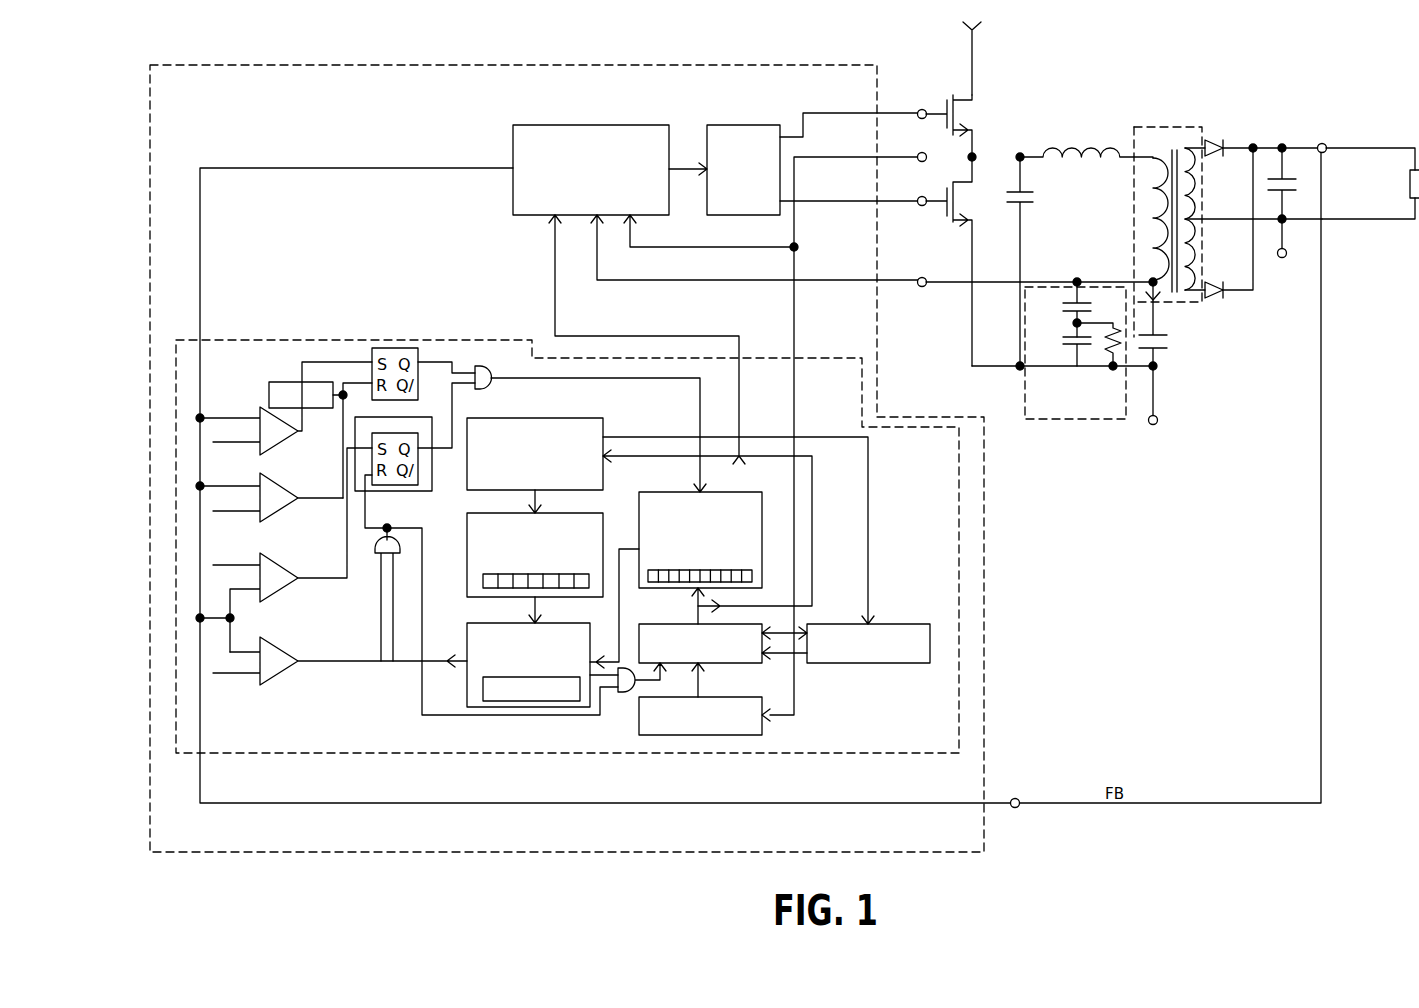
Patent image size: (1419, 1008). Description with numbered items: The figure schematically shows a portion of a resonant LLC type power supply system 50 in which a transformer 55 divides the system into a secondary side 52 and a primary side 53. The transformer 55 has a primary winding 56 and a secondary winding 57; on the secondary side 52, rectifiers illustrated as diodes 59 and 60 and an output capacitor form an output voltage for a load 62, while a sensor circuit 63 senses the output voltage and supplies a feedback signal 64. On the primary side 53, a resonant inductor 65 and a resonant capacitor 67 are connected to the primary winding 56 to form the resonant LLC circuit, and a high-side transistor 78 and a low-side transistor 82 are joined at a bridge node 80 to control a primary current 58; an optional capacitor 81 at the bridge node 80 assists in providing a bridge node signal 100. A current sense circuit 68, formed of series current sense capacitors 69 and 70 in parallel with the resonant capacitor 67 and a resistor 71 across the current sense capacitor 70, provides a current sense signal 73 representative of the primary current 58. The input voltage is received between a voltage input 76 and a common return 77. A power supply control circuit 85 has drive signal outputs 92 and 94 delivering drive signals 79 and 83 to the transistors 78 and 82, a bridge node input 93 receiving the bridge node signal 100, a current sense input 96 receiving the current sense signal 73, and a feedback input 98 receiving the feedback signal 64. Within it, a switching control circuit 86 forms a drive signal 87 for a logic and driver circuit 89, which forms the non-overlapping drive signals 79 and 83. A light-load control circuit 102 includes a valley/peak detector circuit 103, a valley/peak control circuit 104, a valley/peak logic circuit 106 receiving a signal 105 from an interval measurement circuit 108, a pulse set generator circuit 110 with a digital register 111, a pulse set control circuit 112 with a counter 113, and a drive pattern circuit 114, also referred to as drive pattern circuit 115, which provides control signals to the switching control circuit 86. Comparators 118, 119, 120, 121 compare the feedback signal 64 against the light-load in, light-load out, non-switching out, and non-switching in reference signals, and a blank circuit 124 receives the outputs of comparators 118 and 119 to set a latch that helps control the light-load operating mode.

The resonant LLC type power supply system 50 is at (1190, 852).
The secondary side 52 is at (1262, 90).
The primary side 53 is at (1110, 66).
The transformer 55 is at (1158, 127).
The primary winding 56 is at (1130, 127).
The secondary winding 57 is at (1187, 140).
The primary current 58 is at (1160, 300).
The diode 59 is at (1212, 158).
The diode 60 is at (1212, 282).
The load 62 is at (1410, 186).
The sensor circuit 63 is at (1322, 143).
The feedback (FB) signal 64 is at (1165, 803).
The resonant inductor 65 is at (1054, 142).
The resonant capacitor 67 is at (1168, 342).
The current sense circuit 68 is at (1102, 419).
The current sense capacitor 69 is at (1062, 306).
The current sense capacitor 70 is at (1062, 342).
The resistor 71 is at (1100, 352).
The current sense (CS) signal 73 is at (1016, 282).
The voltage input 76 is at (960, 31).
The common return 77 is at (1154, 425).
The high-side transistor 78 is at (968, 108).
The drive signal 79 is at (846, 113).
The switch node or bridge node 80 is at (976, 152).
The capacitor 81 is at (1035, 198).
The low-side transistor 82 is at (953, 226).
The drive signal 83 is at (846, 201).
The power supply control circuit 85 is at (984, 562).
The switching control circuit 86 is at (526, 125).
The drive signal 87 is at (700, 166).
The logic and driver circuit 89 is at (718, 125).
The drive signal output 92 is at (918, 110).
The bridge node input 93 is at (918, 153).
The drive signal output 94 is at (918, 197).
The current sense input 96 is at (918, 278).
The feedback (FB) input 98 is at (1020, 799).
The bridge node signal 100 is at (848, 157).
The light-load control circuit 102 is at (290, 340).
The valley/peak (V/P) detector circuit 103 is at (764, 732).
The valley/peak (V/P) control circuit 104 is at (680, 624).
The signal 105 is at (872, 564).
The valley/peak (V/P) logic circuit 106 is at (898, 624).
The interval measurement circuit 108 is at (590, 418).
The pulse set generator circuit 110 is at (467, 527).
The digital register 111 is at (483, 580).
The pulse set control circuit 112 is at (467, 644).
The counter 113 is at (483, 688).
The drive pattern circuit 114 is at (752, 492).
The drive pattern circuit 115 is at (750, 566).
The comparator 118 is at (280, 446).
The comparator 119 is at (280, 513).
The comparator 120 is at (280, 592).
The comparator 121 is at (280, 675).
The blanking or blank circuit 124 is at (272, 382).